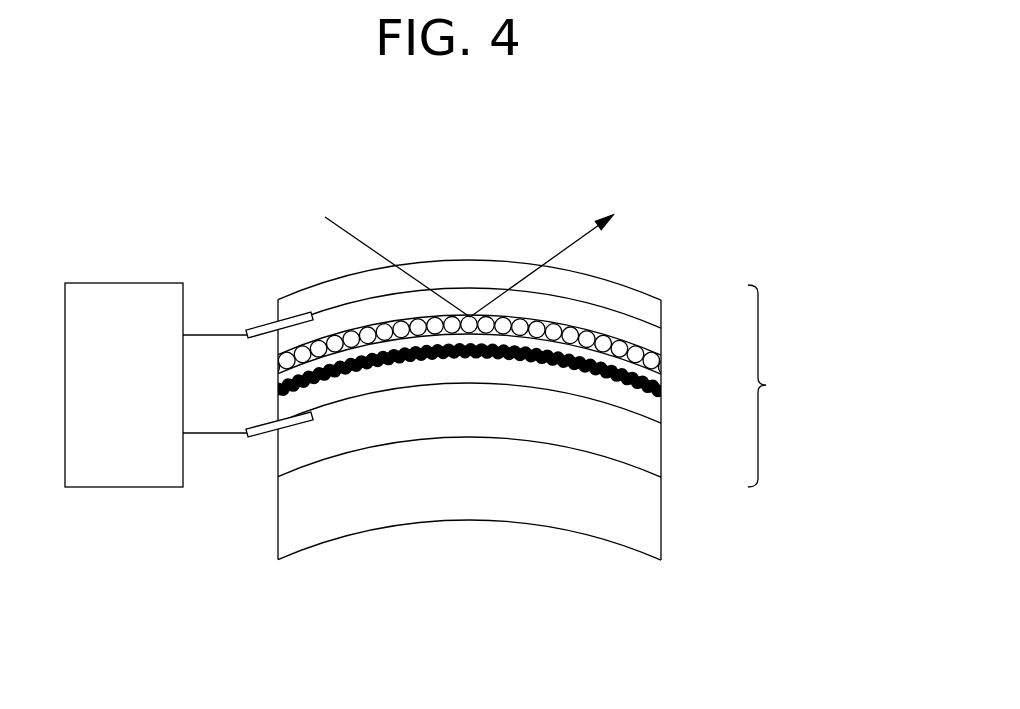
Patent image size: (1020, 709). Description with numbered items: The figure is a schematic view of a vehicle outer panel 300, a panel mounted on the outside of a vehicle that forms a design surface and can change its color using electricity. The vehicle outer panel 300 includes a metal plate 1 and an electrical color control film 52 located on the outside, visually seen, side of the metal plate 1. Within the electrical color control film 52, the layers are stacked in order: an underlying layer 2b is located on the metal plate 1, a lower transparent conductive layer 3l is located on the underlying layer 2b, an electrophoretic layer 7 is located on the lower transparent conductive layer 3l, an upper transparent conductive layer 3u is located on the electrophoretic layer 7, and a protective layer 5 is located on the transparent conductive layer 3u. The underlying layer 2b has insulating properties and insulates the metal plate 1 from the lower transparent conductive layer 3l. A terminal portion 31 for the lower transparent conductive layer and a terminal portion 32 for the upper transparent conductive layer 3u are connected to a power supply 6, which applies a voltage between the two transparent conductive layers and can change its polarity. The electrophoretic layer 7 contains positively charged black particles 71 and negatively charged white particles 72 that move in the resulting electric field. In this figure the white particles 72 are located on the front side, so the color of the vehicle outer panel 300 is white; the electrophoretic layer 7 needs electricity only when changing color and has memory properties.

The vehicle outer panel 300 is at (667, 180).
The electrical color control film 52 is at (780, 386).
The protective layer 5 is at (653, 310).
The transparent conductive layer 3u is at (653, 339).
The electrophoretic layer 7 is at (494, 337).
The white particles 72 is at (607, 347).
The black particles 71 is at (557, 372).
The transparent conductive layer 3l is at (653, 420).
The underlying layer 2b is at (653, 455).
The metal plate 1 is at (653, 525).
The power supply 6 is at (140, 487).
The terminal portion 32 is at (257, 327).
The terminal portion 31 is at (260, 438).